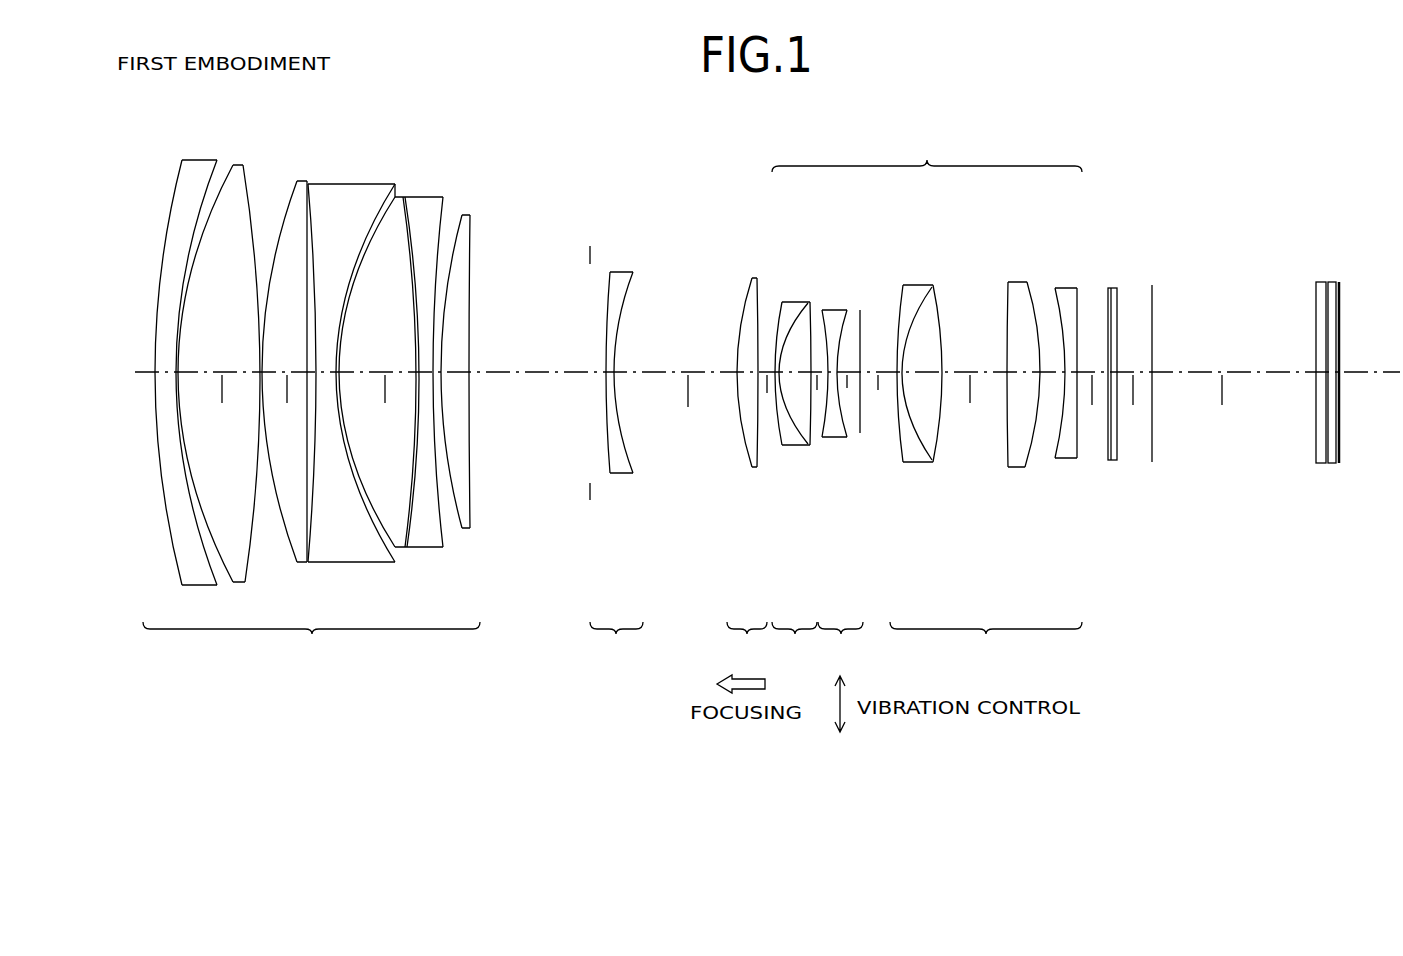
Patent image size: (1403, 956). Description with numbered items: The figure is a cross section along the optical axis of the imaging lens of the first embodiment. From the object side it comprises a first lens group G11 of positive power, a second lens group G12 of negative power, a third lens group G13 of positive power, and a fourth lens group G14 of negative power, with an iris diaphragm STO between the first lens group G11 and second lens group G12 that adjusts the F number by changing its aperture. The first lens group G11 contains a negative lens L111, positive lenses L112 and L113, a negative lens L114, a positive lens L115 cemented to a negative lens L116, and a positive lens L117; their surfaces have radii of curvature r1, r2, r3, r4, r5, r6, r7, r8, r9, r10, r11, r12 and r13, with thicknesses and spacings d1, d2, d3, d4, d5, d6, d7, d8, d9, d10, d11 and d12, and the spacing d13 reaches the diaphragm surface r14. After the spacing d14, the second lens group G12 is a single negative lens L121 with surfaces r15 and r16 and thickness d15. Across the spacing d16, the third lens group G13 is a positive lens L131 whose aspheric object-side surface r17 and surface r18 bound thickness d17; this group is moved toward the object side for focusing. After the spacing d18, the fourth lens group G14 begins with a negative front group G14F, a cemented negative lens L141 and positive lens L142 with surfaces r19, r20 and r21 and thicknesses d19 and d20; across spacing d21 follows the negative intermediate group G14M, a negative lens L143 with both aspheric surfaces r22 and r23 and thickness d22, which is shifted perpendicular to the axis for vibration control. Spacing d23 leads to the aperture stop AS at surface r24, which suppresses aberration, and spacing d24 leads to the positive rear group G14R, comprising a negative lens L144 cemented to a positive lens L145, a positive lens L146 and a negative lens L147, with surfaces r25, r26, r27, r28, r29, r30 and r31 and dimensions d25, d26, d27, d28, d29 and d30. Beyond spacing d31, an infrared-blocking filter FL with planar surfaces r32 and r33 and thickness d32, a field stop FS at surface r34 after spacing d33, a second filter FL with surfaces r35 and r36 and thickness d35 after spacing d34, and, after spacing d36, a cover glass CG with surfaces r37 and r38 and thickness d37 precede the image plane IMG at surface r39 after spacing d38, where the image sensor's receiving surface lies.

The first lens group G11 is at (311, 642).
The second lens group G12 is at (616, 643).
The third lens group G13 is at (747, 642).
The fourth lens group G14 is at (927, 153).
The front group G14F is at (794, 642).
The intermediate group G14M is at (840, 642).
The rear group G14R is at (986, 643).
The negative lens L111 is at (167, 347).
The positive lens L112 is at (233, 331).
The positive lens L113 is at (292, 336).
The negative lens L114 is at (351, 333).
The positive lens L115 is at (414, 325).
The negative lens L116 is at (450, 331).
The positive lens L117 is at (486, 364).
The negative lens L121 is at (613, 345).
The positive lens L131 is at (724, 350).
The negative lens L141 is at (759, 328).
The positive lens L142 is at (791, 325).
The negative lens L143 is at (848, 326).
The negative lens L144 is at (923, 331).
The positive lens L145 is at (958, 366).
The positive lens L146 is at (1001, 346).
The negative lens L147 is at (1070, 326).
The iris diaphragm STO is at (588, 240).
The aperture stop AS is at (862, 310).
The filter FL is at (1113, 287).
The field stop FS is at (1153, 285).
The cover glass CG is at (1332, 282).
The image plane IMG is at (1340, 287).
The radius of curvature r1 is at (168, 218).
The radius of curvature r2 is at (207, 180).
The radius of curvature r3 is at (228, 168).
The radius of curvature r4 is at (250, 178).
The radius of curvature r5 is at (278, 230).
The radius of curvature r6 is at (303, 180).
The radius of curvature r7 is at (313, 213).
The radius of curvature r8 is at (368, 237).
The radius of curvature r9 is at (397, 220).
The radius of curvature r10 is at (432, 207).
The radius of curvature r11 is at (447, 207).
The radius of curvature r12 is at (462, 250).
The radius of curvature r13 is at (469, 317).
The radius of curvature r14 is at (590, 255).
The radius of curvature r15 is at (605, 337).
The radius of curvature r16 is at (620, 332).
The radius of curvature r17 is at (737, 355).
The radius of curvature r18 is at (755, 332).
The radius of curvature r19 is at (755, 302).
The radius of curvature r20 is at (780, 327).
The radius of curvature r21 is at (806, 317).
The radius of curvature r22 is at (822, 313).
The radius of curvature r23 is at (843, 317).
The radius of curvature r24 is at (860, 347).
The radius of curvature r25 is at (900, 283).
The radius of curvature r26 is at (925, 287).
The radius of curvature r27 is at (943, 353).
The radius of curvature r28 is at (1007, 313).
The radius of curvature r29 is at (1023, 283).
The radius of curvature r30 is at (1055, 302).
The radius of curvature r31 is at (1077, 292).
The radius of curvature r32 is at (1108, 345).
The radius of curvature r33 is at (1117, 345).
The radius of curvature r34 is at (1153, 305).
The radius of curvature r35 is at (1315, 347).
The radius of curvature r36 is at (1323, 323).
The radius of curvature r37 is at (1327, 297).
The radius of curvature r38 is at (1338, 317).
The radius of curvature r39 is at (1338, 347).
The thickness d1 is at (163, 375).
The distance between surfaces d2 is at (173, 378).
The thickness d3 is at (218, 405).
The distance between surfaces d4 is at (261, 378).
The thickness d5 is at (287, 404).
The distance between surfaces d6 is at (303, 563).
The thickness d7 is at (330, 375).
The distance between surfaces d8 is at (348, 375).
The thickness d9 is at (386, 404).
The thickness d10 is at (425, 375).
The distance between surfaces d11 is at (438, 375).
The thickness d12 is at (455, 375).
The distance between surfaces d13 is at (540, 375).
The distance between surfaces d14 is at (598, 377).
The thickness d15 is at (614, 377).
The distance between surfaces d16 is at (689, 405).
The thickness d17 is at (745, 377).
The distance between surfaces d18 is at (752, 470).
The thickness d19 is at (778, 443).
The thickness d20 is at (797, 445).
The distance between surfaces d21 is at (818, 400).
The thickness d22 is at (833, 380).
The distance between surfaces d23 is at (850, 400).
The distance between surfaces d24 is at (879, 399).
The thickness d25 is at (902, 377).
The thickness d26 is at (923, 377).
The distance between surfaces d27 is at (970, 407).
The thickness d28 is at (1023, 377).
The distance between surfaces d29 is at (1053, 375).
The thickness d30 is at (1068, 375).
The distance between surfaces d31 is at (1090, 405).
The thickness d32 is at (1112, 462).
The distance between surfaces d33 is at (1132, 405).
The distance between surfaces d34 is at (1220, 405).
The thickness d35 is at (1318, 375).
The distance between surfaces d36 is at (1325, 377).
The thickness d37 is at (1333, 377).
The distance between surfaces d38 is at (1337, 375).